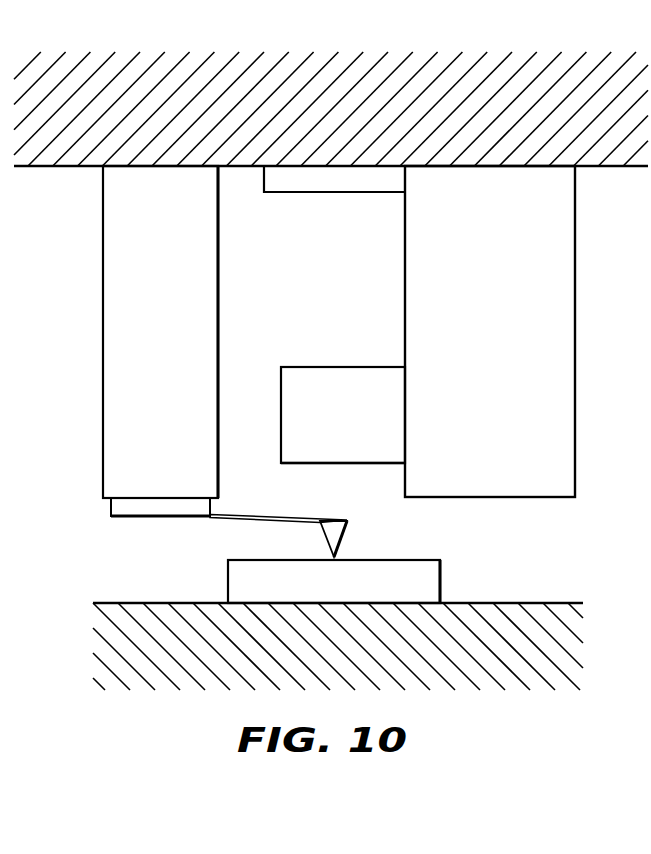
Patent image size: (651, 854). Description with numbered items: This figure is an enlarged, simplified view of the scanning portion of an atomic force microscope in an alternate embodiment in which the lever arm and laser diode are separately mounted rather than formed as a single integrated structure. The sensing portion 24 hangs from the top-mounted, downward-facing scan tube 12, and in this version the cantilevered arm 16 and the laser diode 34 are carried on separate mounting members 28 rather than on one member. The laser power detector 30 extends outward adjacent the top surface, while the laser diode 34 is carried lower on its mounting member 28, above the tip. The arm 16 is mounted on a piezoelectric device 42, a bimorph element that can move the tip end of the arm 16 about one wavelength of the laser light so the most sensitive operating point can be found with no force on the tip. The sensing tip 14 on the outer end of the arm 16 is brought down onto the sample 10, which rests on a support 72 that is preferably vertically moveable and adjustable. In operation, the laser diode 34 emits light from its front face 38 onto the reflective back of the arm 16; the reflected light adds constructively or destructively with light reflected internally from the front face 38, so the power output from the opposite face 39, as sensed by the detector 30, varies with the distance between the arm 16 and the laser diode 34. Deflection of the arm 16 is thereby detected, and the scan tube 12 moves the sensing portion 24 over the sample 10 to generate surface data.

The sample 10 is at (430, 577).
The scan tube 12 is at (68, 153).
The sensing tip 14 is at (338, 535).
The cantilevered arm 16 is at (250, 518).
The sensing portion 24 is at (90, 345).
The mounting member 28 is at (503, 349).
The laser power detector 30 is at (291, 184).
The laser diode 34 is at (356, 429).
The front face 38 is at (320, 464).
The opposite face 39 is at (333, 367).
The piezoelectric device 42 is at (139, 509).
The support 72 is at (527, 617).